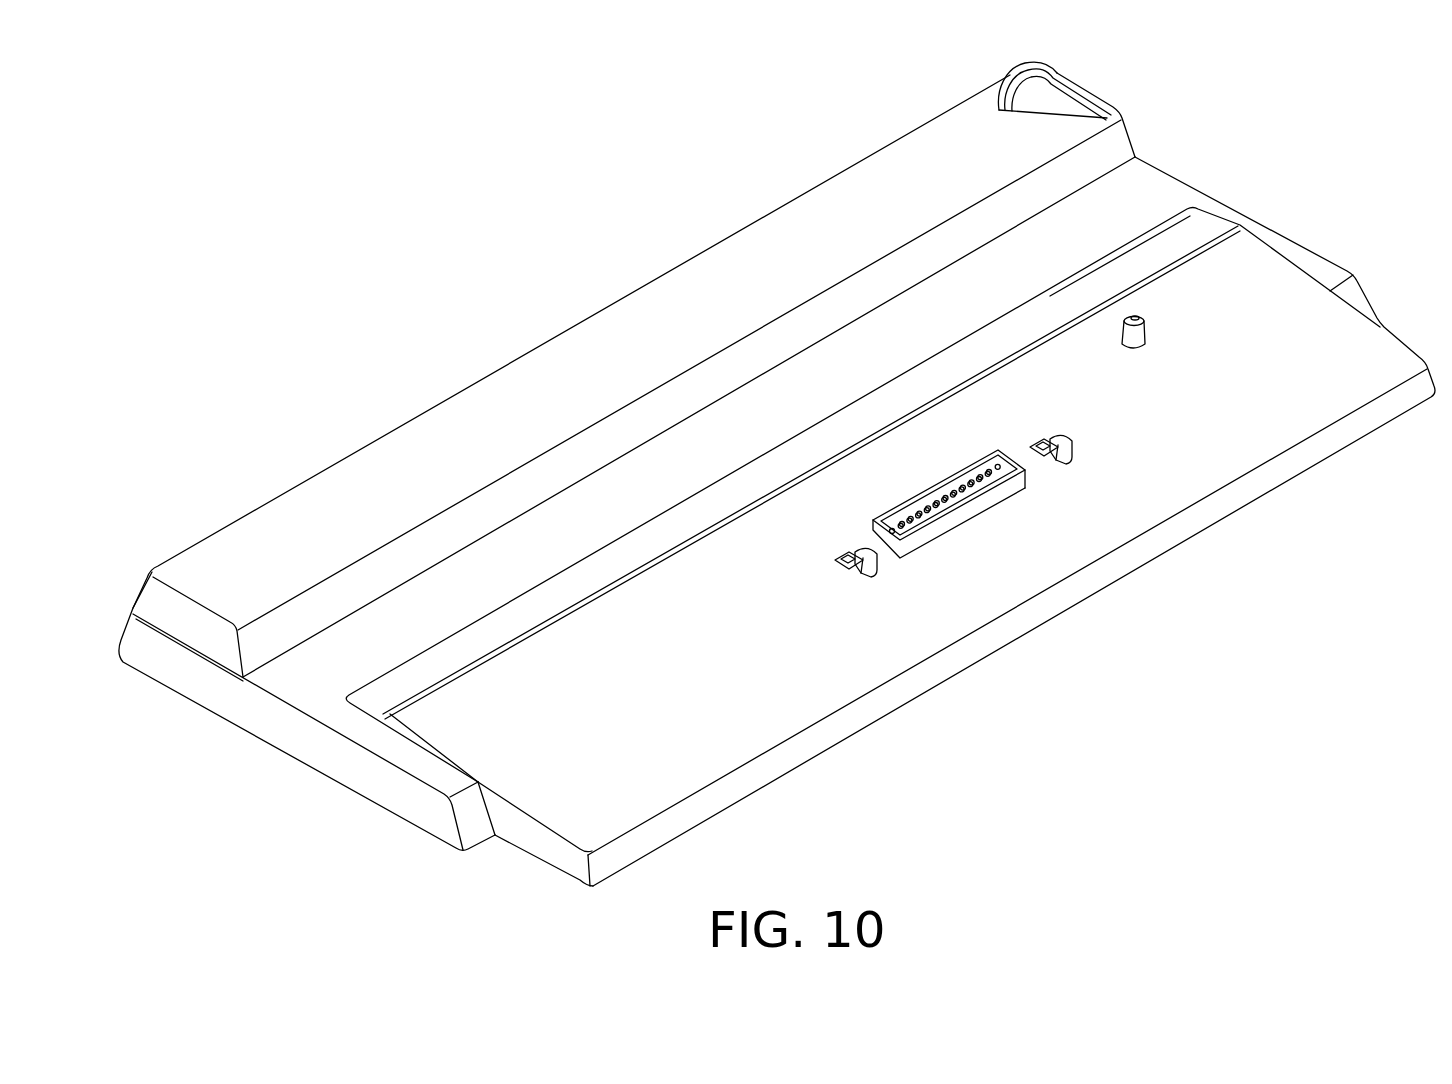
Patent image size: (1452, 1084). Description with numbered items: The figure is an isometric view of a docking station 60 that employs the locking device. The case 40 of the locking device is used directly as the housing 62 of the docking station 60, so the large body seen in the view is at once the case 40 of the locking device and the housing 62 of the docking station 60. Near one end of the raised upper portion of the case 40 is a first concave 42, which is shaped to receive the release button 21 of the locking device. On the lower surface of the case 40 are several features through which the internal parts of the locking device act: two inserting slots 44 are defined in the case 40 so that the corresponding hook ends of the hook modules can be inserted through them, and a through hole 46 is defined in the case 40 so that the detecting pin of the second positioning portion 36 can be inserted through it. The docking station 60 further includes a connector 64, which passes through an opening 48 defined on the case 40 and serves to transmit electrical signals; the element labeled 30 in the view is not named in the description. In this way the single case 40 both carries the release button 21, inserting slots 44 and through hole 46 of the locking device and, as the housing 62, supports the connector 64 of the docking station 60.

The docking station 60 is at (627, 130).
The housing 62 is at (634, 375).
The case 40 is at (660, 308).
The first concave 42 is at (1015, 92).
The release button 21 is at (1063, 103).
The second positioning portion 36 is at (1142, 314).
The through hole 46 is at (1146, 340).
The inserting slots 44 is at (1041, 437).
The connector 30 is at (1065, 440).
The opening 48 is at (1030, 480).
The connector 64 is at (977, 493).